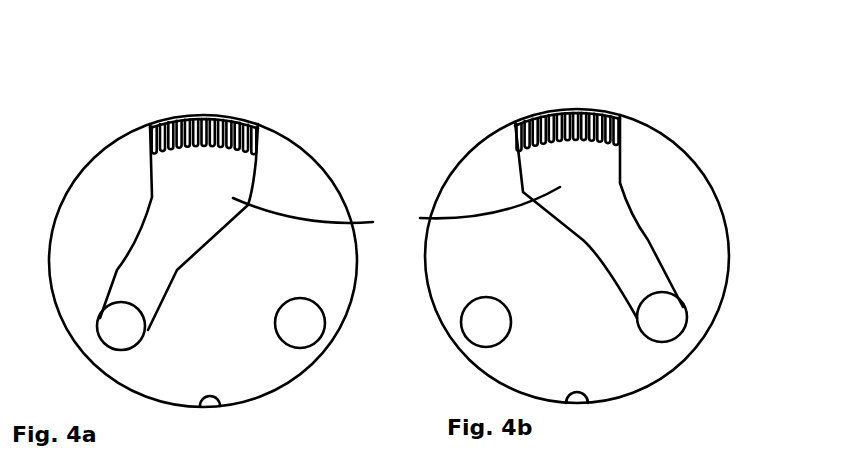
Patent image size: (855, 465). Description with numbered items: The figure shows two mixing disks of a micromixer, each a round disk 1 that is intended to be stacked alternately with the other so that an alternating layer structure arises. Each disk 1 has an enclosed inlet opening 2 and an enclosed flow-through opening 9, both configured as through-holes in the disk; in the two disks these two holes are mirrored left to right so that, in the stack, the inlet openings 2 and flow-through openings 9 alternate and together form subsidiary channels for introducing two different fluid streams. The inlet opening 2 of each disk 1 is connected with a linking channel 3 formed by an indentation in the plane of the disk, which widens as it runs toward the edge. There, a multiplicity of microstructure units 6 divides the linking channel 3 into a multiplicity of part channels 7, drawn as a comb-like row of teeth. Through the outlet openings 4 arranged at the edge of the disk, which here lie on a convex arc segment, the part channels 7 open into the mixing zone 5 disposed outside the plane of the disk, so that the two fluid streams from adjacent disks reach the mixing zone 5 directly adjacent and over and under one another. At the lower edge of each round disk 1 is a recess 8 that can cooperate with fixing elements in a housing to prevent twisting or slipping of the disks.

In FIG. 4A, the disk 1 is at (317, 185).
In FIG. 4B, the disk 1 is at (457, 187).
In FIG. 4A, the inlet opening 2 is at (115, 328).
In FIG. 4B, the inlet opening 2 is at (672, 317).
In FIG. 4A, the linking channel 3 is at (315, 214).
In FIG. 4B, the linking channel 3 is at (490, 202).
In FIG. 4A, the outlet openings 4 is at (225, 118).
In FIG. 4B, the outlet openings 4 is at (563, 112).
In FIG. 4A, the mixing zone 5 is at (205, 110).
In FIG. 4B, the mixing zone 5 is at (575, 105).
In FIG. 4A, the microstructure units 6 is at (147, 125).
In FIG. 4B, the microstructure units 6 is at (613, 127).
In FIG. 4A, the part channels 7 is at (172, 117).
In FIG. 4B, the part channels 7 is at (607, 112).
In FIG. 4A, the recess 8 is at (210, 406).
In FIG. 4B, the recess 8 is at (577, 402).
In FIG. 4A, the flow-through opening 9 is at (307, 325).
In FIG. 4B, the flow-through opening 9 is at (478, 323).